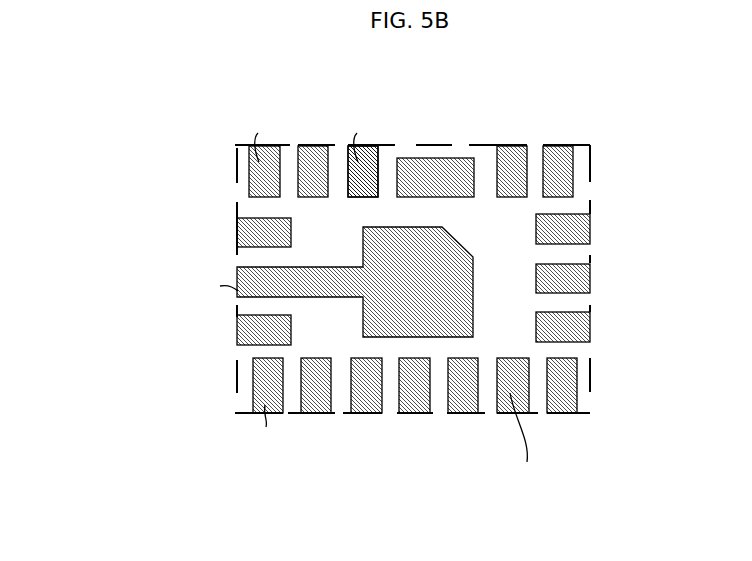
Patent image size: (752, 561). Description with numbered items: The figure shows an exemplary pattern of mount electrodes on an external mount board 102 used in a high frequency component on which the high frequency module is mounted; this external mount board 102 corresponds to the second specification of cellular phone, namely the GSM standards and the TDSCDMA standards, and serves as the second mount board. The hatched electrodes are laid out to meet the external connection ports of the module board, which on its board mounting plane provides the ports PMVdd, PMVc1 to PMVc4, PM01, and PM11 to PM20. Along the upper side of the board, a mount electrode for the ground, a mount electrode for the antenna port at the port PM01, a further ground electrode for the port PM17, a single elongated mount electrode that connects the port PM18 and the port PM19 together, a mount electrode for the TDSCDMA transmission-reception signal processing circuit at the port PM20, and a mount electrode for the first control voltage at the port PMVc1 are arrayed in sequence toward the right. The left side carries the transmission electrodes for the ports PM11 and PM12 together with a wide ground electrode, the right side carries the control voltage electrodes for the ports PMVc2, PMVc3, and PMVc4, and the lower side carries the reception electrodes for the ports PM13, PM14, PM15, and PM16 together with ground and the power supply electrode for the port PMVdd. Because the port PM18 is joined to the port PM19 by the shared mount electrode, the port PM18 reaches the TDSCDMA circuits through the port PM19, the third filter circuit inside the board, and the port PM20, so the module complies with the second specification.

The external mount board 102 is at (195, 134).
The external connection port PM01 is at (312, 162).
The external connection port PM11 is at (238, 233).
The external connection port PM12 is at (238, 338).
The external connection port PM13 is at (307, 395).
The external connection port PM14 is at (362, 395).
The external connection port PM15 is at (414, 393).
The external connection port PM16 is at (463, 393).
The external connection port PM17 is at (363, 171).
The external connection port PM18 is at (449, 124).
The external connection port PM19 is at (442, 165).
The external connection port PM20 is at (503, 146).
The external connection port PMVc1 is at (560, 157).
The external connection port PMVc2 is at (590, 230).
The external connection port PMVc3 is at (590, 280).
The external connection port PMVc4 is at (590, 326).
The external connection port PMVdd is at (563, 393).